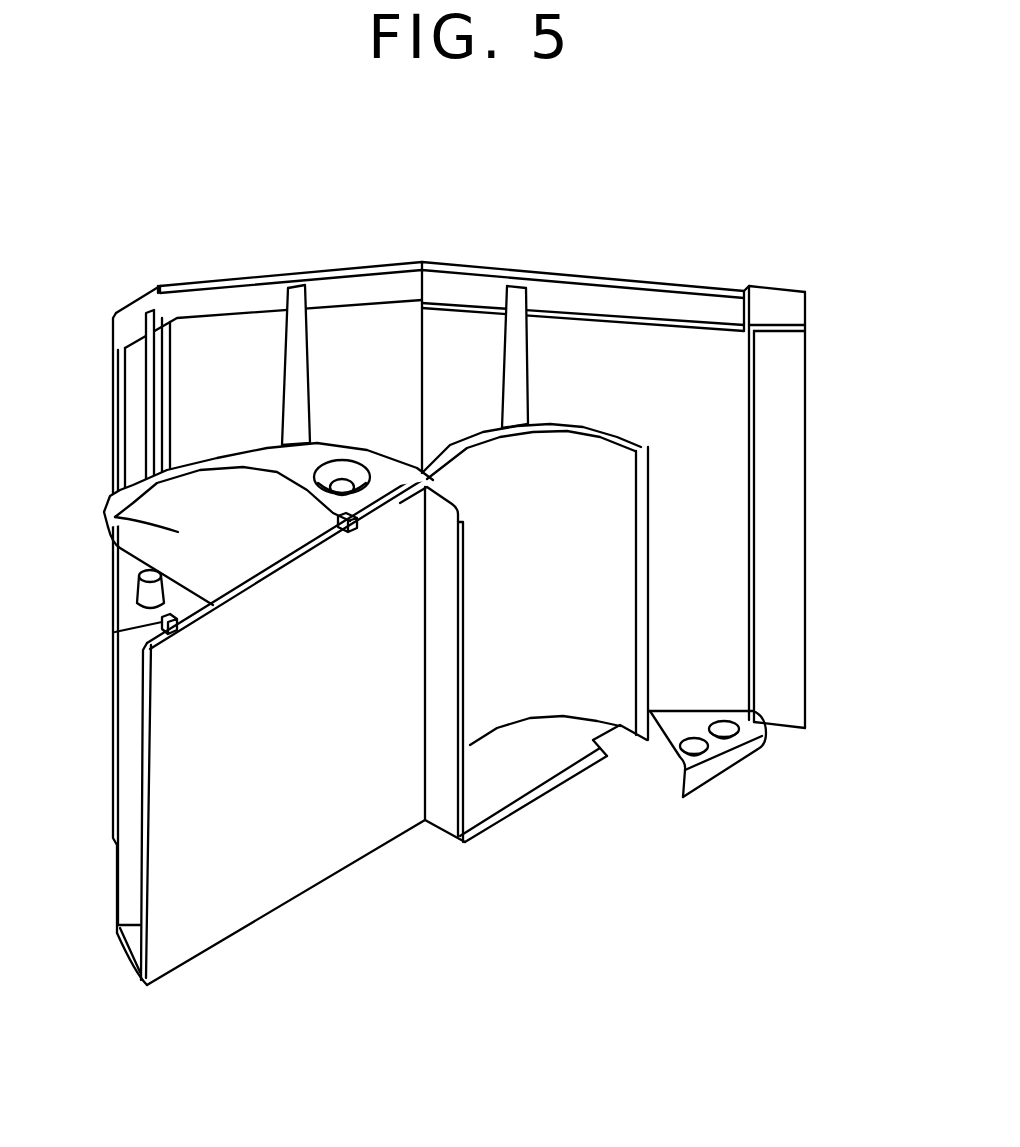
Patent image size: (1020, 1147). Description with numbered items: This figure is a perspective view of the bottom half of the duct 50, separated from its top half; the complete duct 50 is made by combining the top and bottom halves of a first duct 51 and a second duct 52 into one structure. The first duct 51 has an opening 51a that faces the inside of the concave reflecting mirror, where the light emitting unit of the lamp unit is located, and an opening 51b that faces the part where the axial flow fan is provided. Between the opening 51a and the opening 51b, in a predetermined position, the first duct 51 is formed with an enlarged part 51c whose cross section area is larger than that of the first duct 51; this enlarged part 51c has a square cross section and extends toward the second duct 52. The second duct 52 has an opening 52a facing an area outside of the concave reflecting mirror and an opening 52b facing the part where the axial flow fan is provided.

The duct 50 is at (604, 248).
The first duct 51 is at (403, 489).
The opening 51a is at (522, 683).
The opening 51b is at (137, 890).
The enlarged part 51c is at (116, 512).
The second duct 52 is at (347, 343).
The opening 52a is at (695, 503).
The opening 52b is at (138, 397).